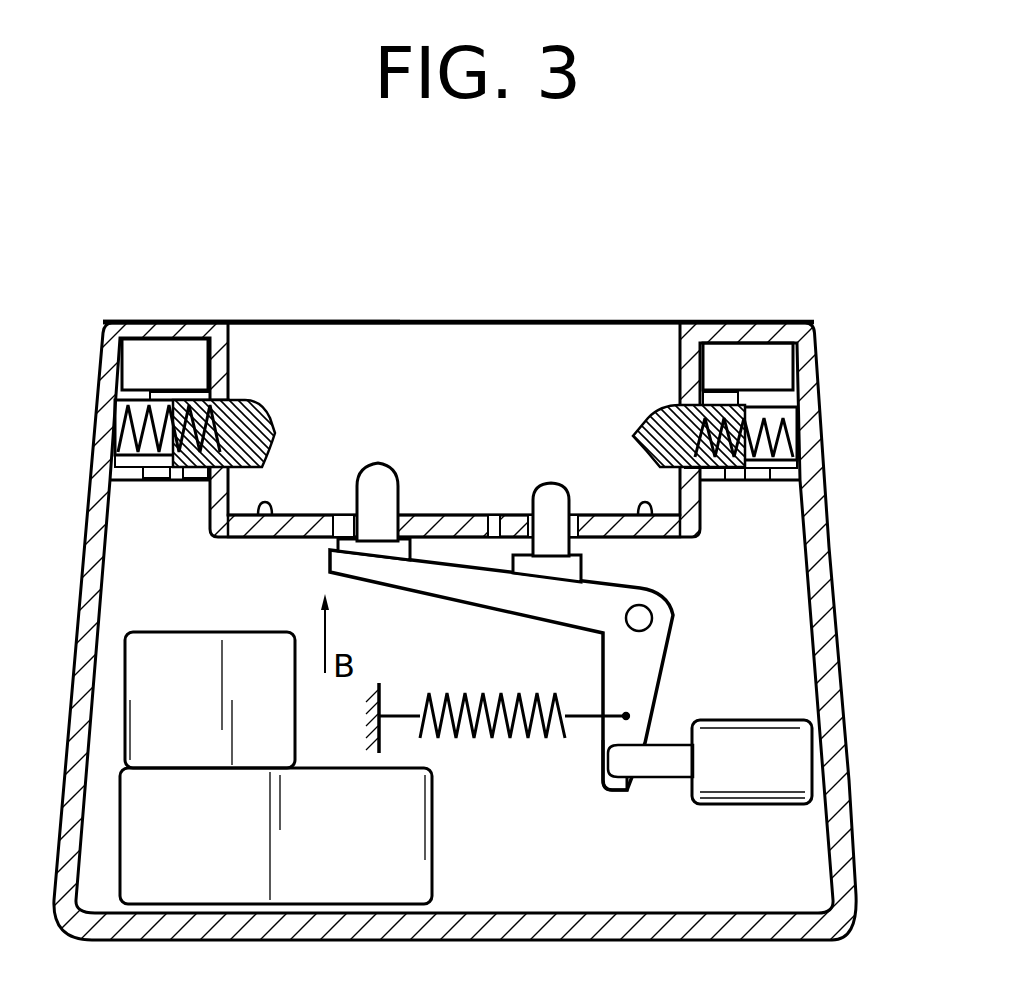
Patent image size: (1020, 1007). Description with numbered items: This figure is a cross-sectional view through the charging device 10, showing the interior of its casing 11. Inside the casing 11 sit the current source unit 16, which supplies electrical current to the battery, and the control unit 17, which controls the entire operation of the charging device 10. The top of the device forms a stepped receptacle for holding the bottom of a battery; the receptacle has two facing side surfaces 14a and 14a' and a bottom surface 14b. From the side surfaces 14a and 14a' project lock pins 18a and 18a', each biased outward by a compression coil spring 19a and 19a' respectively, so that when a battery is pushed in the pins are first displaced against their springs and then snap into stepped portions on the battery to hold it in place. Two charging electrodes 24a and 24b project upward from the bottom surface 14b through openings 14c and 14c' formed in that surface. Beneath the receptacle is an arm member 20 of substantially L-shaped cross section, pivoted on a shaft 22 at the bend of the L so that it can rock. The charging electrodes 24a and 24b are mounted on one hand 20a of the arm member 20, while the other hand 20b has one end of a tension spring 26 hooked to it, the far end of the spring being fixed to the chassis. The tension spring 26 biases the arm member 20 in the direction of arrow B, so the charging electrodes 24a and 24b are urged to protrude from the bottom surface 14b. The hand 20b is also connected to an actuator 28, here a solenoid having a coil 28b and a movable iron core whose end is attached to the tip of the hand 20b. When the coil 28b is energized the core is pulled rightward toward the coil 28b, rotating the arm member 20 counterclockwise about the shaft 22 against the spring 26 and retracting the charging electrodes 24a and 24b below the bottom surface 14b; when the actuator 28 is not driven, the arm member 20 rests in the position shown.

The charging device 10 is at (812, 283).
The casing 11 is at (828, 645).
The side surface 14a is at (458, 302).
The side surface 14a' is at (251, 289).
The bottom surface 14b is at (450, 515).
The opening 14c is at (559, 492).
The opening 14c' is at (318, 493).
The current source unit 16 is at (183, 655).
The control unit 17 is at (418, 880).
The lock pin 18a is at (664, 413).
The lock pin 18a' is at (256, 413).
The compression coil spring 19a is at (744, 483).
The compression coil spring 19a' is at (169, 476).
The arm member 20 is at (536, 686).
The hand 20a is at (462, 600).
The hand 20b is at (603, 735).
The shaft 22 is at (650, 617).
The charging electrode 24a is at (408, 447).
The charging electrode 24b is at (545, 490).
The tension spring 26 is at (507, 740).
The actuator 28 is at (710, 789).
The coil 28b is at (793, 707).